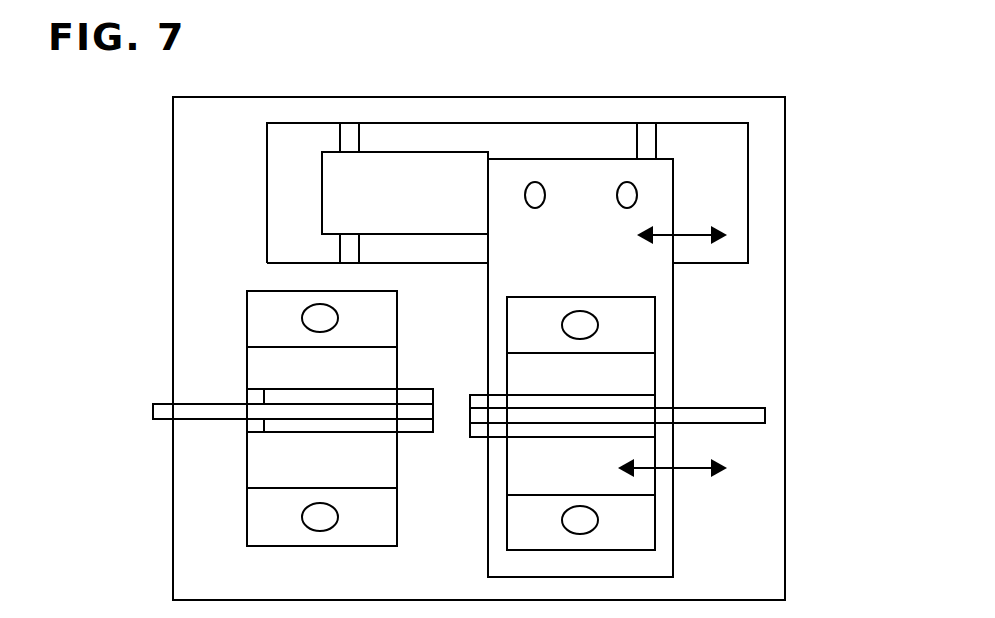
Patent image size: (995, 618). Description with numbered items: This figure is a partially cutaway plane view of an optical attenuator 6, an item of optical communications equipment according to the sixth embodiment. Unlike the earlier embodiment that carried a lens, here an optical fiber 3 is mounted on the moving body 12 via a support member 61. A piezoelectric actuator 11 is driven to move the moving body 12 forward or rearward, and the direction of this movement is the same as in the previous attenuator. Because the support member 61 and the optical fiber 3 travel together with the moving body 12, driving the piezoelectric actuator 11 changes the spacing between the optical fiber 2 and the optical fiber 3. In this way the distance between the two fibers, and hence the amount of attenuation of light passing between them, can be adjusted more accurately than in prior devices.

The optical attenuator 6 is at (298, 50).
The piezoelectric actuator 11 is at (507, 144).
The moving body 12 is at (477, 130).
The support member 61 is at (672, 368).
The optical fiber 2 is at (274, 372).
The optical fiber 3 is at (657, 394).